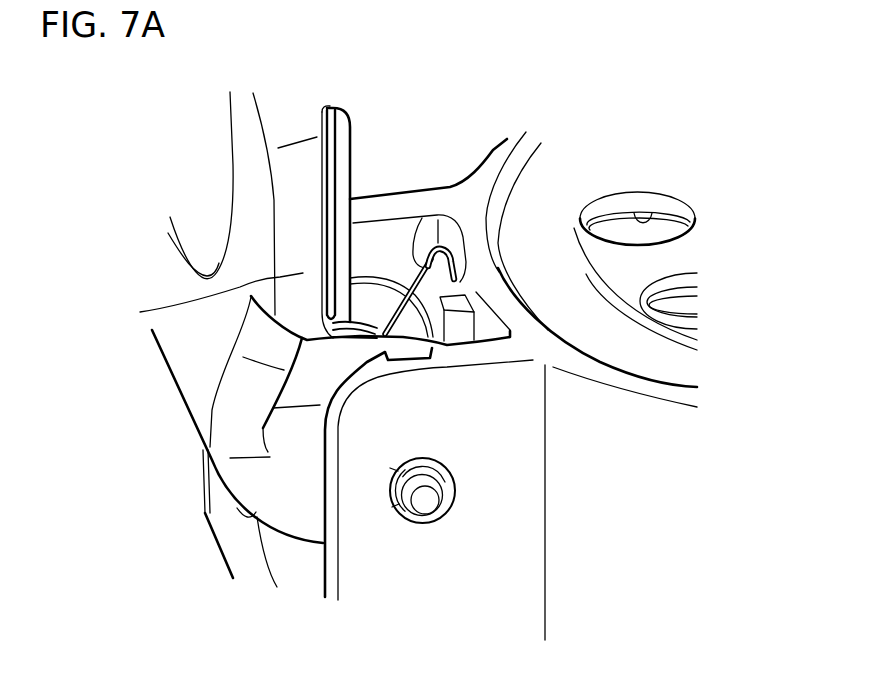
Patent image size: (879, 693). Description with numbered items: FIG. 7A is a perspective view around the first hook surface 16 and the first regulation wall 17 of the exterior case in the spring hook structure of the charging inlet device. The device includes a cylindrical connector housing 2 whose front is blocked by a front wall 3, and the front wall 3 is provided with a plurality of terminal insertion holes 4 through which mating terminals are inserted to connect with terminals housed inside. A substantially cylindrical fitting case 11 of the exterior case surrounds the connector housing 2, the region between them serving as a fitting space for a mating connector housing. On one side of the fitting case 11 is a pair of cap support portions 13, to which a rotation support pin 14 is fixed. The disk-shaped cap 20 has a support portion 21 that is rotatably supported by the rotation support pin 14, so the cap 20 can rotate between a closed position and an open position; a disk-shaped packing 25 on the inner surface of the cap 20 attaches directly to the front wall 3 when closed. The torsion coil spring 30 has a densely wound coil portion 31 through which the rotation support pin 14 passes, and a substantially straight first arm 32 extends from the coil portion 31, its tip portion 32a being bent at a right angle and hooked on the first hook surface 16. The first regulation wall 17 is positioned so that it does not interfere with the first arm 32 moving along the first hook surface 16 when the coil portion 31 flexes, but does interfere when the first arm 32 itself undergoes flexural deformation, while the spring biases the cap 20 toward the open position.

The connector housing 2 is at (658, 352).
The front wall 3 is at (663, 258).
The terminal insertion holes 4 is at (655, 220).
The fitting case 11 is at (682, 394).
The cap support portions 13 is at (418, 207).
The rotation support pin 14 is at (423, 505).
The first hook surface 16 is at (478, 285).
The first regulation wall 17 is at (462, 323).
The cap 20 is at (211, 210).
The support portion 21 is at (307, 387).
The packing 25 is at (344, 147).
The torsion coil spring 30 is at (370, 314).
The coil portion 31 is at (336, 320).
The first arm 32 is at (452, 266).
The tip portion 32a is at (541, 143).